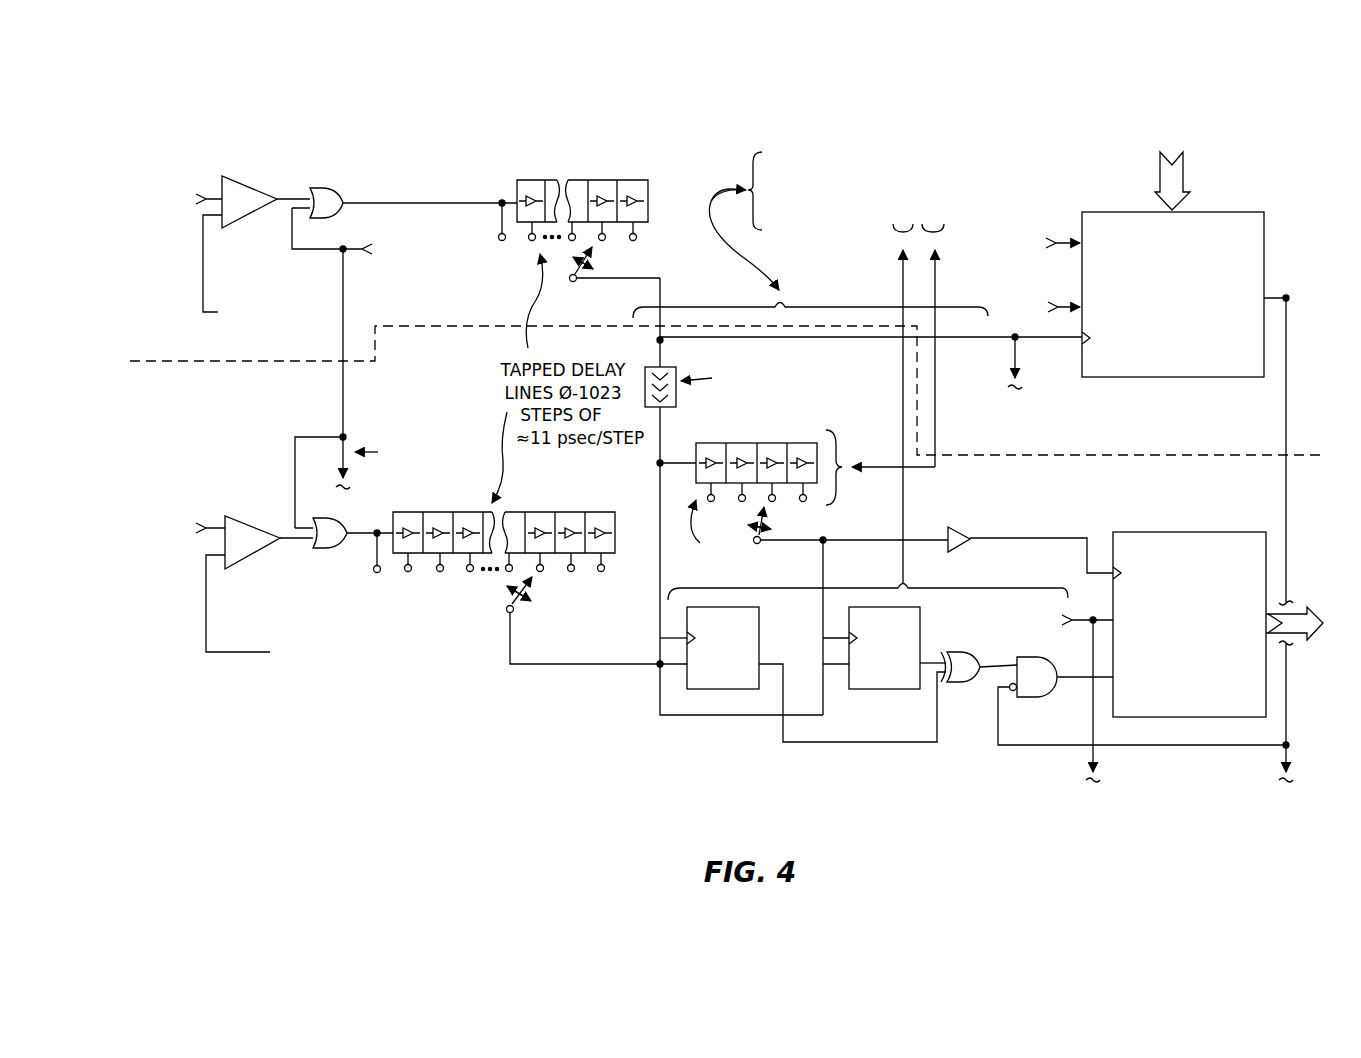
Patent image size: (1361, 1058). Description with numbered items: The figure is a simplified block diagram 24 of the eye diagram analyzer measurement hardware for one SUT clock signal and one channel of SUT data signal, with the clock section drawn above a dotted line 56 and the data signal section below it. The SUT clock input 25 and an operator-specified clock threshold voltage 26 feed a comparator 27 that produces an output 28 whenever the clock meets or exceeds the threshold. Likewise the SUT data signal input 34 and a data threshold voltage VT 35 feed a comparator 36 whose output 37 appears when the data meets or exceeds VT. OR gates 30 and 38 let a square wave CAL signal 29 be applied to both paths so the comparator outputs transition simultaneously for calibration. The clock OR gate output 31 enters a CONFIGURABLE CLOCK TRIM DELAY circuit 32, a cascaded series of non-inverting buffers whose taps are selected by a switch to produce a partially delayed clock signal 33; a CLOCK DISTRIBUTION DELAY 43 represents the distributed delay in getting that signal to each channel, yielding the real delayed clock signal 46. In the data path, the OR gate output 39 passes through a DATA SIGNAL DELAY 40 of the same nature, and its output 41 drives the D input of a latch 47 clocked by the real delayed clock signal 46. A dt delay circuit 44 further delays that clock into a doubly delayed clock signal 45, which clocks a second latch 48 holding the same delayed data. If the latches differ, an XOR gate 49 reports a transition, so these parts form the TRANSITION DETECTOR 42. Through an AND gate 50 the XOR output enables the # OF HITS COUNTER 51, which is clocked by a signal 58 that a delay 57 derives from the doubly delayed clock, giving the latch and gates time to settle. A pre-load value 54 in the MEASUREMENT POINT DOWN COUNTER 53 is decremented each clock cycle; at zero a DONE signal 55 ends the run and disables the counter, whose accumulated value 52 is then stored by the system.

The simplified block diagram 24 is at (866, 114).
The SUT clock input 25 is at (183, 166).
The clock threshold voltage 26 is at (205, 263).
The comparator 27 is at (251, 177).
The comparator output 28 is at (294, 197).
The CAL signal 29 is at (345, 288).
The OR gate 30 is at (333, 186).
The output signal of OR gate 31 is at (386, 200).
The CONFIGURABLE CLOCK TRIM DELAY circuit 32 is at (542, 178).
The partially delayed clock signal 33 is at (609, 280).
The SUT data signal input 34 is at (213, 530).
The data threshold voltage VT 35 is at (207, 604).
The comparator 36 is at (267, 524).
The comparator output 37 is at (297, 545).
The OR gate 38 is at (321, 550).
The output of OR gate 39 is at (355, 546).
The DATA SIGNAL DELAY 40 is at (613, 503).
The delayed data signal 41 is at (562, 668).
The TRANSITION DETECTOR 42 is at (868, 368).
The CLOCK DISTRIBUTION DELAY 43 is at (677, 395).
The dt delay circuit 44 is at (757, 440).
The doubly delayed clock signal 45 is at (823, 566).
The real delayed clock signal 46 is at (660, 548).
The latch 47 is at (759, 624).
The latch 48 is at (920, 624).
The XOR gate 49 is at (960, 683).
The AND gate 50 is at (1035, 697).
The # OF HITS COUNTER 51 is at (1189, 531).
The accumulated value 52 is at (1314, 607).
The MEASUREMENT POINT DOWN COUNTER 53 is at (1175, 380).
The pre-load value 54 is at (1184, 171).
The DONE signal 55 is at (1288, 353).
The dotted line 56 is at (162, 361).
The delay 57 is at (960, 549).
The counter clock signal 58 is at (1030, 535).